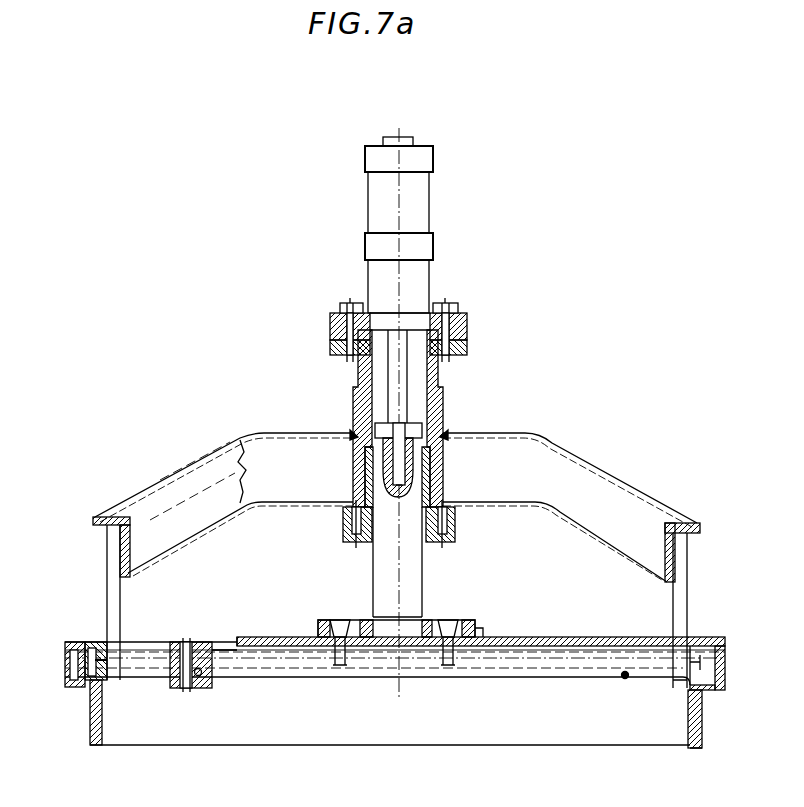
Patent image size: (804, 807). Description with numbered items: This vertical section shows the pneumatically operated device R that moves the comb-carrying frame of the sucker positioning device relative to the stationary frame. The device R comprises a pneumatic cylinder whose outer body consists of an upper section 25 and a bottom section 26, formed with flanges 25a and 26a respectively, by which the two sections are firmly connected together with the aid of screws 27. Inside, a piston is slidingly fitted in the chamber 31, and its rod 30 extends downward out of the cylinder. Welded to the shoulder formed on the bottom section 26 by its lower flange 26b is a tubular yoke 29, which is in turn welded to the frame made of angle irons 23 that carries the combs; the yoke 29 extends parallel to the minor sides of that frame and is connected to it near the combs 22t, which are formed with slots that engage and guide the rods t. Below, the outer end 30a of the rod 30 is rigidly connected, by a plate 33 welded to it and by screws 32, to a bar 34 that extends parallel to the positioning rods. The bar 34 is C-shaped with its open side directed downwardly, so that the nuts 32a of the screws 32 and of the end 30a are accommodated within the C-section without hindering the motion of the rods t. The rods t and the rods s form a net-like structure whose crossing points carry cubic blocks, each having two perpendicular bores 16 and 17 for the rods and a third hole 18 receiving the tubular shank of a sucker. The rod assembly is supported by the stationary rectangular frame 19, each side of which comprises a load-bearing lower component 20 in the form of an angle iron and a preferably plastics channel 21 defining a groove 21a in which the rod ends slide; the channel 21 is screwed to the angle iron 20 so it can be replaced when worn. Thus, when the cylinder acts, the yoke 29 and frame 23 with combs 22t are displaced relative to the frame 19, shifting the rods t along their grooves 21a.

The upper section 25 is at (380, 193).
The flange 25a is at (330, 317).
The flange 26a is at (330, 352).
The screws 27 is at (468, 318).
The bottom section 26 is at (356, 398).
The chamber 31 is at (418, 366).
The lower flange 26b is at (340, 523).
The piston rod 30 is at (408, 569).
The pneumatically operated device R is at (476, 432).
The tubular yoke 29 is at (203, 475).
The frame made of angle irons 23 is at (100, 517).
The combs 22t is at (107, 596).
The lower component 20 is at (95, 745).
The bar 34 is at (570, 637).
The rods t is at (155, 660).
The rectangular frame 19 is at (62, 680).
The channel 21 is at (100, 642).
The groove 21a is at (105, 664).
The bore 17 is at (187, 690).
The bore 16 is at (200, 676).
The third hole 18 is at (182, 690).
The outer end 30a is at (420, 619).
The screws 32 is at (338, 620).
The nuts 32a is at (445, 660).
The plate 33 is at (478, 628).
The rods s is at (625, 680).